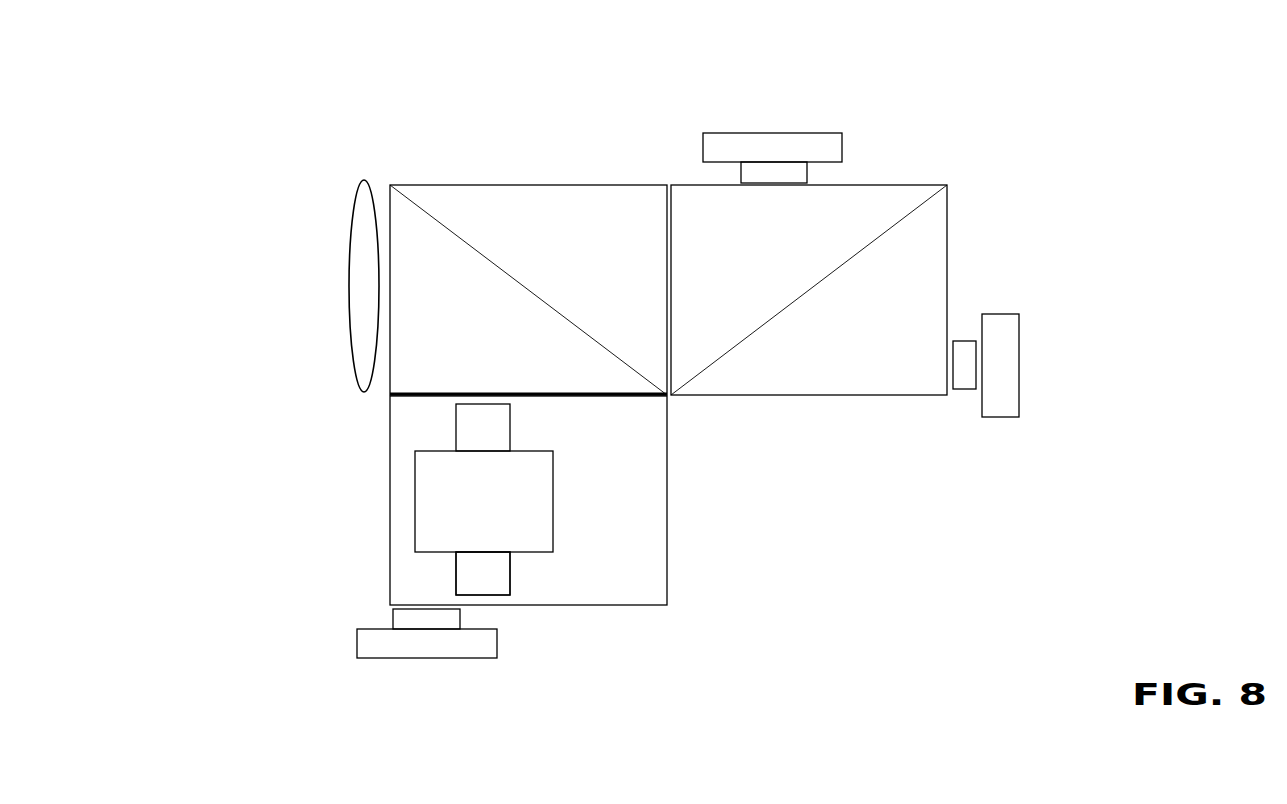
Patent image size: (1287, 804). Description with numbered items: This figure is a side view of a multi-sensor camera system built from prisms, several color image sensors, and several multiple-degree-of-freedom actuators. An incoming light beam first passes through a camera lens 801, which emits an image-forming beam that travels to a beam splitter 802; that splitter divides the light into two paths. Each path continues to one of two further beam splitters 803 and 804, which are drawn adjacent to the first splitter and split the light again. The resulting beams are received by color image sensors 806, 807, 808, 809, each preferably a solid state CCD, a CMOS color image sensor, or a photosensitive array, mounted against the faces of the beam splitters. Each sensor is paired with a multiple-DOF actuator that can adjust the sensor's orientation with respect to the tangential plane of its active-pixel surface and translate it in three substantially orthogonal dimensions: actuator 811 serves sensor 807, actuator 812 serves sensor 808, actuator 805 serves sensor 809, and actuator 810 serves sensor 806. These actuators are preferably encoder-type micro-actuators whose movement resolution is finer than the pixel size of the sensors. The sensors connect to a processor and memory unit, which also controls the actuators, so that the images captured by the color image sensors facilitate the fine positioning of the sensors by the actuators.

The camera lens 801 is at (342, 258).
The beam splitter 802 is at (462, 183).
The beam splitter 803 is at (953, 238).
The beam splitter 804 is at (672, 545).
The multiple-DOF actuator 805 is at (412, 658).
The color image sensor 806 is at (503, 595).
The color image sensor 807 is at (812, 172).
The color image sensor 808 is at (963, 390).
The color image sensor 809 is at (388, 616).
The multiple-DOF actuator 810 is at (558, 467).
The multiple-DOF actuator 811 is at (810, 127).
The multiple-DOF actuator 812 is at (1023, 370).